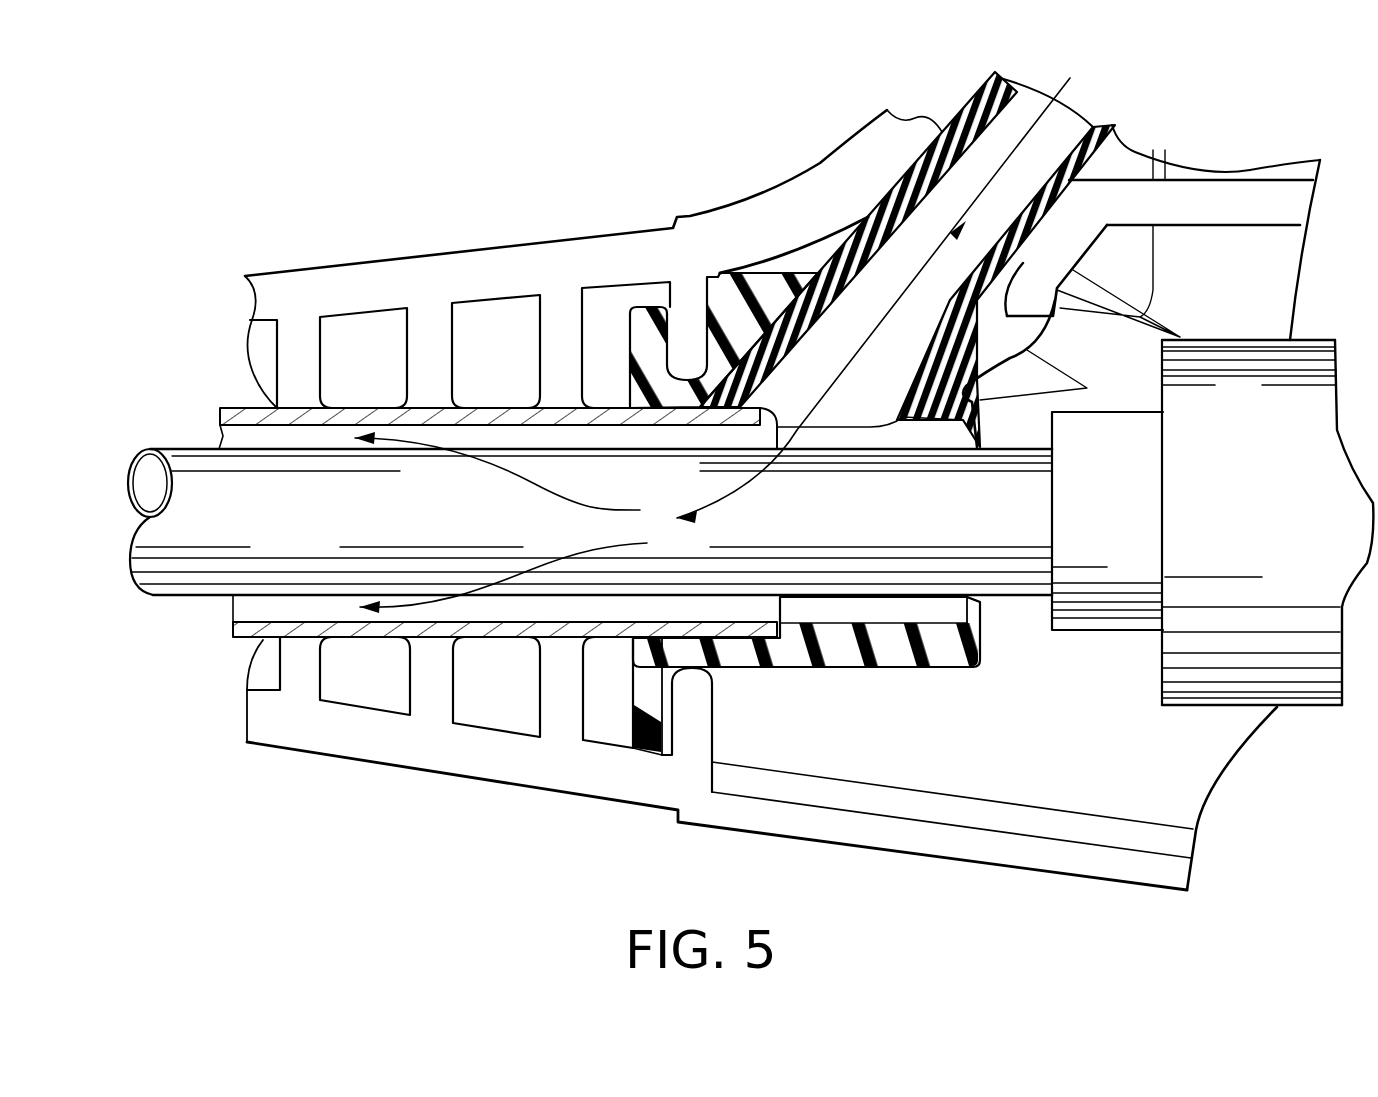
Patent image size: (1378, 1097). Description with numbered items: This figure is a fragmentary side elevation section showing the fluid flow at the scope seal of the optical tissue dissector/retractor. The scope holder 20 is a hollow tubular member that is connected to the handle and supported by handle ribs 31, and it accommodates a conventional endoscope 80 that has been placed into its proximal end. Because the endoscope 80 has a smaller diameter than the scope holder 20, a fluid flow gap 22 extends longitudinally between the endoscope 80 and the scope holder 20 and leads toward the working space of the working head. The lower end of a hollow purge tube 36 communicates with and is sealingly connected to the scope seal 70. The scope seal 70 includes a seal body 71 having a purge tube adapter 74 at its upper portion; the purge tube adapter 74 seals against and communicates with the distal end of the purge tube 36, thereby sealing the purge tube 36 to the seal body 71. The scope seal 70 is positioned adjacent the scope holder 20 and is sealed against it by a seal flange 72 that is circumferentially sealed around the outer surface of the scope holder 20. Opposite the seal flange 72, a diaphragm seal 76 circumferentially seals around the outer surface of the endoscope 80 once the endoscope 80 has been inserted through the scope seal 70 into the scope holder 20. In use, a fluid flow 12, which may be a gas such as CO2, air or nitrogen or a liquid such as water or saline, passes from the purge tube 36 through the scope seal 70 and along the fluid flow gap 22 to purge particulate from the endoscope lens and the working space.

The fluid flow 12 is at (530, 483).
The scope holder 20 is at (230, 405).
The fluid flow gap 22 is at (330, 612).
The handle ribs 31 is at (403, 690).
The purge tube 36 is at (972, 100).
The scope seal 70 is at (848, 672).
The seal body 71 is at (785, 668).
The seal flange 72 is at (617, 707).
The purge tube adapter 74 is at (900, 388).
The diaphragm seal 76 is at (977, 612).
The endoscope 80 is at (246, 520).